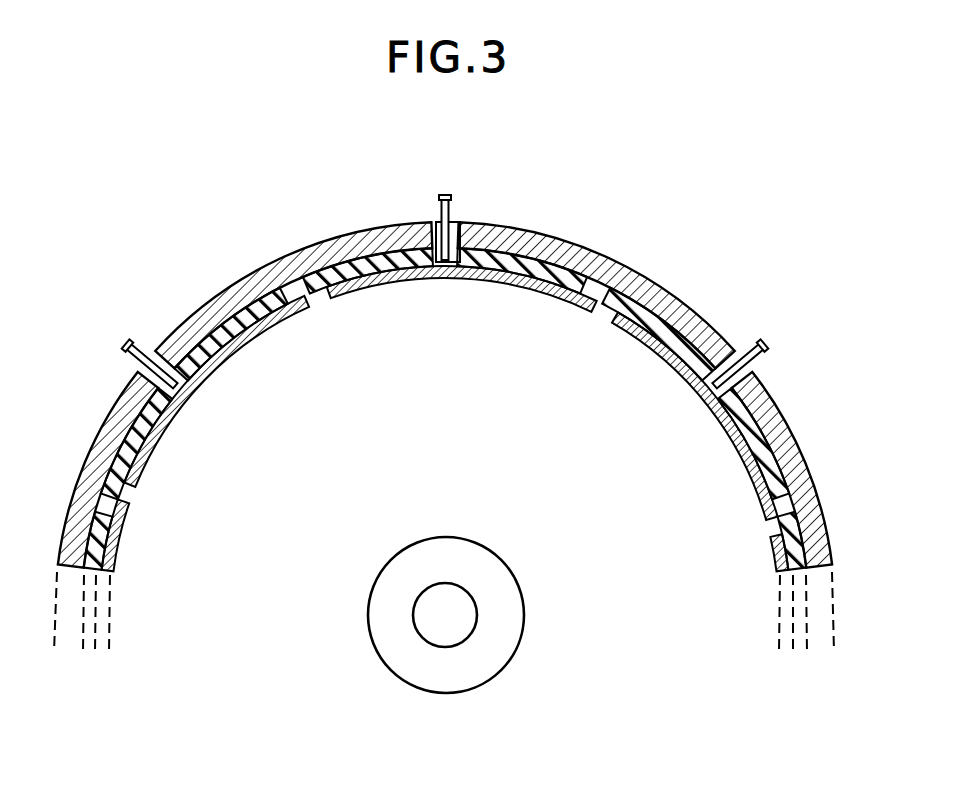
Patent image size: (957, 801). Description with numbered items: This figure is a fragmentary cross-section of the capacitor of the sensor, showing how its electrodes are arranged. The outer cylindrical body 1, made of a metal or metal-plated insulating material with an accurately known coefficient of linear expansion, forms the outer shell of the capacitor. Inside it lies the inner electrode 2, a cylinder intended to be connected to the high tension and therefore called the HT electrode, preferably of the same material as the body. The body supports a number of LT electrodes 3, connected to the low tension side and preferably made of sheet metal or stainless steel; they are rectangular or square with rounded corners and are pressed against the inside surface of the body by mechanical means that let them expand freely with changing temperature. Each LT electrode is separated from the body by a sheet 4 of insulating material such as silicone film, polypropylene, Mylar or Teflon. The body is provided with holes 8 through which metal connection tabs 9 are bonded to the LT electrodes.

The outer cylindrical body 1 is at (652, 295).
The inner electrode 2 is at (478, 558).
The LT electrodes 3 is at (747, 453).
The sheet of insulating material 4 is at (650, 343).
The holes 8 is at (454, 228).
The metal connection tabs 9 is at (763, 343).